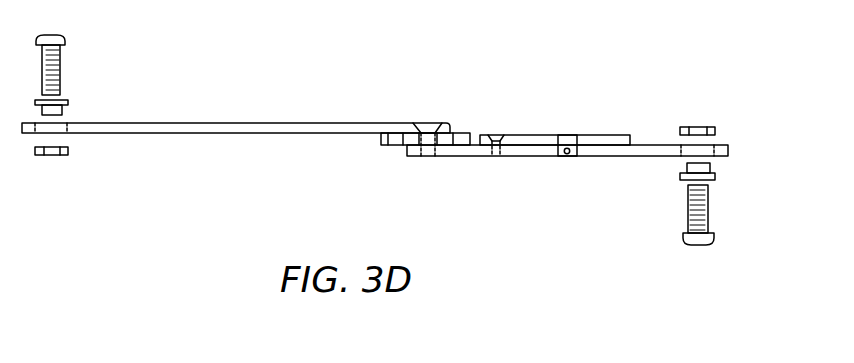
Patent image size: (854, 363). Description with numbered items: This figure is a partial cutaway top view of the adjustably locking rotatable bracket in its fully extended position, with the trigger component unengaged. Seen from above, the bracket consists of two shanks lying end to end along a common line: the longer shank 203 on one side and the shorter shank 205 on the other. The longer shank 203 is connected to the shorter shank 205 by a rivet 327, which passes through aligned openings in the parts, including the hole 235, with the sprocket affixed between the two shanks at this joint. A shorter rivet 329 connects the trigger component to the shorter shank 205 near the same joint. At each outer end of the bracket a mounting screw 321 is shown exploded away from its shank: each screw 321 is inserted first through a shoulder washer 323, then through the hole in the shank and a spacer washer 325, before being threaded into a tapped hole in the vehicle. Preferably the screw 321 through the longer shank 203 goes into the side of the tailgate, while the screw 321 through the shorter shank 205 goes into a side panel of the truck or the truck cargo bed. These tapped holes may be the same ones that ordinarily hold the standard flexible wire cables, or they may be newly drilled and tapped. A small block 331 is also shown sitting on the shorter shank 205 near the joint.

The longer shank 203 is at (270, 136).
The shorter shank 205 is at (605, 157).
The hole 235 is at (503, 148).
The screw 321 is at (59, 63).
The shoulder washer 323 is at (67, 103).
The spacer washer 325 is at (70, 151).
The rivet 327 is at (428, 157).
The shorter rivet 329 is at (495, 157).
The block 331 is at (565, 135).